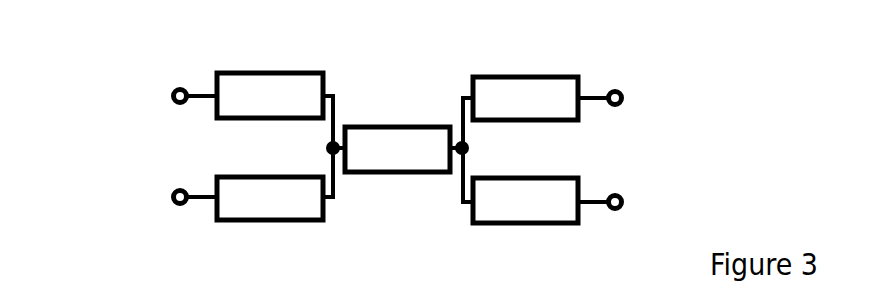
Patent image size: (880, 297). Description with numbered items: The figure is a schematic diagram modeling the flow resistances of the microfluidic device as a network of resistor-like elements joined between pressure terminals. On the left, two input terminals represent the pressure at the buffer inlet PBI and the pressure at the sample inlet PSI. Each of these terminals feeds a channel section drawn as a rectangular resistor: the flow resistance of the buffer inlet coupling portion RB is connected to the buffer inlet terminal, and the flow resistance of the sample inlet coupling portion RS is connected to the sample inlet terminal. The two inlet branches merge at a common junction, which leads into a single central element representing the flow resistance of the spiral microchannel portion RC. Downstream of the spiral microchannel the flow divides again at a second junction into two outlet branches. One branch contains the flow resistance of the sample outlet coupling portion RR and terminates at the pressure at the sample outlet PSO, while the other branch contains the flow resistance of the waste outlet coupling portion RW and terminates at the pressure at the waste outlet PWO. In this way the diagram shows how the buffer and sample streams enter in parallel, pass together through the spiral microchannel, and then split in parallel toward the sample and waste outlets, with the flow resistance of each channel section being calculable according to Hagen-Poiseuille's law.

The flow resistance of the buffer inlet coupling portion RB is at (276, 75).
The flow resistance of the sample inlet coupling portion RS is at (276, 179).
The flow resistance of the spiral microchannel portion RC is at (397, 129).
The flow resistance of the sample outlet coupling portion RR is at (519, 76).
The flow resistance of the waste outlet coupling portion RW is at (519, 179).
The pressure at the buffer inlet PBI is at (169, 87).
The pressure at the sample inlet PSI is at (169, 188).
The pressure at the sample outlet PSO is at (631, 89).
The pressure at the waste outlet PWO is at (634, 193).